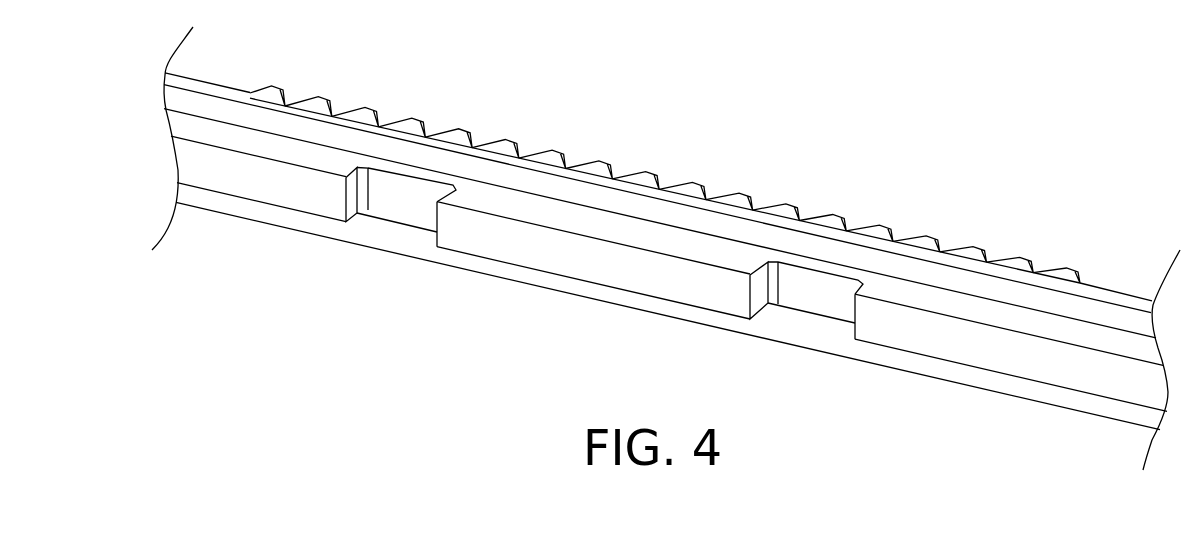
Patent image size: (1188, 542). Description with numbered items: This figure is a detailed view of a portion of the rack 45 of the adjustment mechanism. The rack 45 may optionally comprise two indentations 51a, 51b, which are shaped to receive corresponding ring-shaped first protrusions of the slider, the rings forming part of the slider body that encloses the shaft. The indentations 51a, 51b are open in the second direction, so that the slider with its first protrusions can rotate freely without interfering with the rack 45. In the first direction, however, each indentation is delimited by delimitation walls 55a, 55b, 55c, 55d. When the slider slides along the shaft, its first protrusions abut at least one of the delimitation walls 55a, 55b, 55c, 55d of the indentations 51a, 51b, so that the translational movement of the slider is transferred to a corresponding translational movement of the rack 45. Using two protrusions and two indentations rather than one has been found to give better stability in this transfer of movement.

The rack 45 is at (843, 123).
The indentation 51a is at (407, 195).
The indentation 51b is at (821, 292).
The delimitation wall 55a is at (350, 194).
The delimitation wall 55b is at (425, 238).
The delimitation wall 55c is at (758, 292).
The delimitation wall 55d is at (843, 327).